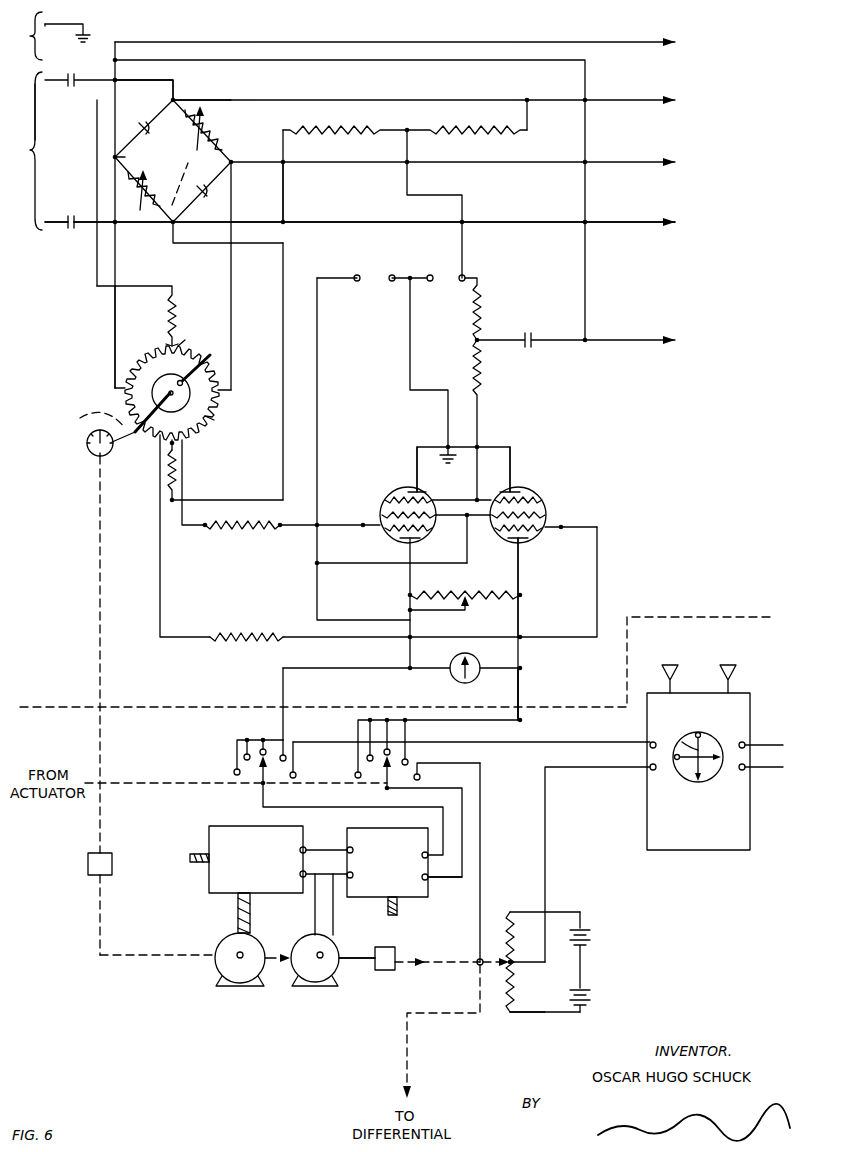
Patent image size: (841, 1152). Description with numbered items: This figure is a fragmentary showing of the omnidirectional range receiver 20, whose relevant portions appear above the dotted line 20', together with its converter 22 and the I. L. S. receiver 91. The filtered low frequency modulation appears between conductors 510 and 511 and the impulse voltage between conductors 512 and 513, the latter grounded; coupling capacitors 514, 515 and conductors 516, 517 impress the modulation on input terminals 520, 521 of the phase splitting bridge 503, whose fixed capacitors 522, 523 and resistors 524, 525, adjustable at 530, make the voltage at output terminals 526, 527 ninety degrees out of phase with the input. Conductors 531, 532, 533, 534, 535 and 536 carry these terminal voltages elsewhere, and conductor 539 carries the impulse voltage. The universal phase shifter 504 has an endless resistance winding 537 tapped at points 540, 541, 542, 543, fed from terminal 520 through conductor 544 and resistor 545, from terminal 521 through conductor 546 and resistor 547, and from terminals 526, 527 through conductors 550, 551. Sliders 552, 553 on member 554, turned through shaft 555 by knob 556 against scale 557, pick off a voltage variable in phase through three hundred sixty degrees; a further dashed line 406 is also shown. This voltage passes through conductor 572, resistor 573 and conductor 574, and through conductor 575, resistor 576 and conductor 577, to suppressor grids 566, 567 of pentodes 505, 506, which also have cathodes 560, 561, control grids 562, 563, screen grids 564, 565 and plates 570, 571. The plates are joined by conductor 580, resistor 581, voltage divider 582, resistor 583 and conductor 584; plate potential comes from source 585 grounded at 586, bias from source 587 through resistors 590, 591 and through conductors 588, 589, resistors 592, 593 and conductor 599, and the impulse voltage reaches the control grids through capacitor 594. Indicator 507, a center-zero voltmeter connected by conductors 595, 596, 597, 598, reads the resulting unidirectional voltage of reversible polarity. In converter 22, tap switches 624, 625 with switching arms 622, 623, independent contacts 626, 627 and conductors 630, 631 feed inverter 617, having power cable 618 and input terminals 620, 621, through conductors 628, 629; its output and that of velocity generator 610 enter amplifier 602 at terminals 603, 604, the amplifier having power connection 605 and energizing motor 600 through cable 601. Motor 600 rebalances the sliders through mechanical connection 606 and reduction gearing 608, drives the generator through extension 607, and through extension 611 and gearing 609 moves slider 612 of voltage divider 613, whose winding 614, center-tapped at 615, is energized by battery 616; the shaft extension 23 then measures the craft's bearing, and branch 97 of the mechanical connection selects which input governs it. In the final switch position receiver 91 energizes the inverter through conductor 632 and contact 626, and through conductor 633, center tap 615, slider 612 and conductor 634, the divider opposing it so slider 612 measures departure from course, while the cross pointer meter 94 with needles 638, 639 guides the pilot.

The servo amplifier 20 is at (547, 458).
The dotted line 20' is at (395, 644).
The converter 22 is at (612, 922).
The shaft extension 23 is at (400, 1070).
The I. L. S. receiver 91 is at (700, 850).
The cross pointer meter 94 is at (718, 740).
The branch of mechanical connection 97 is at (115, 776).
The dashed shaft connection 406 is at (100, 600).
The phase splitting bridge 503 is at (180, 159).
The universal phase shifter 504 is at (187, 391).
The pentode 505 is at (386, 498).
The pentode 506 is at (542, 492).
The indicator 507 is at (476, 660).
The conductor 510 is at (52, 112).
The conductor 511 is at (60, 228).
The conductor 512 is at (61, 34).
The conductor 513 is at (83, 24).
The coupling capacitor 514 is at (76, 78).
The coupling capacitor 515 is at (64, 218).
The conductor 516 is at (140, 78).
The conductor 517 is at (160, 228).
The input terminal 520 is at (178, 98).
The input terminal 521 is at (176, 228).
The fixed capacitor 522 is at (142, 122).
The fixed capacitor 523 is at (210, 201).
The resistor 524 is at (216, 130).
The resistor 525 is at (140, 212).
The output terminal 526 is at (112, 157).
The output terminal 527 is at (233, 168).
The adjustment 530 is at (185, 184).
The conductor 531 is at (450, 100).
The conductor 532 is at (600, 102).
The conductor 533 is at (280, 226).
The conductor 534 is at (600, 224).
The conductor 535 is at (598, 42).
The conductor 536 is at (600, 164).
The endless resistance winding 537 is at (190, 342).
The conductor 539 is at (600, 342).
The tap 540 is at (165, 340).
The tap 541 is at (180, 444).
The tap 542 is at (124, 392).
The tap 543 is at (216, 392).
The conductor 544 is at (97, 122).
The resistor 545 is at (178, 300).
The conductor 546 is at (283, 470).
The resistor 547 is at (180, 470).
The conductor 550 is at (115, 342).
The conductor 551 is at (234, 272).
The slider 552 is at (210, 355).
The slider 553 is at (142, 438).
The member 554 is at (216, 420).
The shaft 555 is at (88, 416).
The manual knob 556 is at (87, 446).
The scale 557 is at (95, 458).
The cathode 560 is at (416, 490).
The cathode 561 is at (512, 490).
The control grid 562 is at (380, 500).
The control grid 563 is at (548, 504).
The screen grid 564 is at (380, 518).
The screen grid 565 is at (498, 530).
The suppressor grid 566 is at (388, 532).
The suppressor grid 567 is at (552, 530).
The plate 570 is at (418, 548).
The plate 571 is at (524, 552).
The conductor 572 is at (188, 527).
The resistor 573 is at (236, 530).
The conductor 574 is at (308, 540).
The conductor 575 is at (162, 600).
The resistor 576 is at (236, 630).
The conductor 577 is at (302, 632).
The conductor 580 is at (410, 580).
The resistor 581 is at (410, 596).
The voltage divider 582 is at (472, 603).
The resistor 583 is at (524, 612).
The conductor 584 is at (524, 586).
The source 585 is at (371, 270).
The ground 586 is at (440, 460).
The bias source 587 is at (438, 270).
The conductor 588 is at (286, 195).
The conductor 589 is at (530, 120).
The resistor 590 is at (480, 308).
The resistor 591 is at (482, 360).
The resistor 592 is at (328, 136).
The resistor 593 is at (490, 140).
The capacitor 594 is at (532, 338).
The conductor 595 is at (406, 664).
The conductor 596 is at (440, 672).
The conductor 597 is at (505, 672).
The conductor 598 is at (522, 668).
The conductor 599 is at (466, 256).
The motor 600 is at (228, 986).
The cable 601 is at (252, 918).
The amplifier 602 is at (228, 826).
The input terminal 603 is at (310, 846).
The input terminal 604 is at (310, 872).
The power connection 605 is at (198, 868).
The mechanical connection 606 is at (170, 968).
The shaft extension 607 is at (282, 972).
The reduction gearing 608 is at (88, 864).
The reduction gearing 609 is at (402, 972).
The velocity generator 610 is at (345, 950).
The shaft extension 611 is at (368, 958).
The slider 612 is at (478, 968).
The voltage divider 613 is at (500, 925).
The winding 614 is at (506, 1000).
The center tap 615 is at (516, 966).
The battery 616 is at (574, 942).
The inverter 617 is at (340, 900).
The power cable 618 is at (398, 914).
The input terminal 620 is at (422, 852).
The input terminal 621 is at (428, 882).
The switching contact 622 is at (258, 770).
The switching contact 623 is at (380, 778).
The tap switch 624 is at (234, 770).
The tap switch 625 is at (424, 767).
The contact 626 is at (300, 768).
The contact 627 is at (420, 756).
The conductor 628 is at (278, 800).
The conductor 629 is at (462, 806).
The conductor 630 is at (283, 690).
The conductor 631 is at (522, 690).
The conductor 632 is at (560, 742).
The conductor 633 is at (588, 770).
The conductor 634 is at (482, 858).
The vertical needle 638 is at (680, 736).
The horizontal needle 639 is at (656, 768).